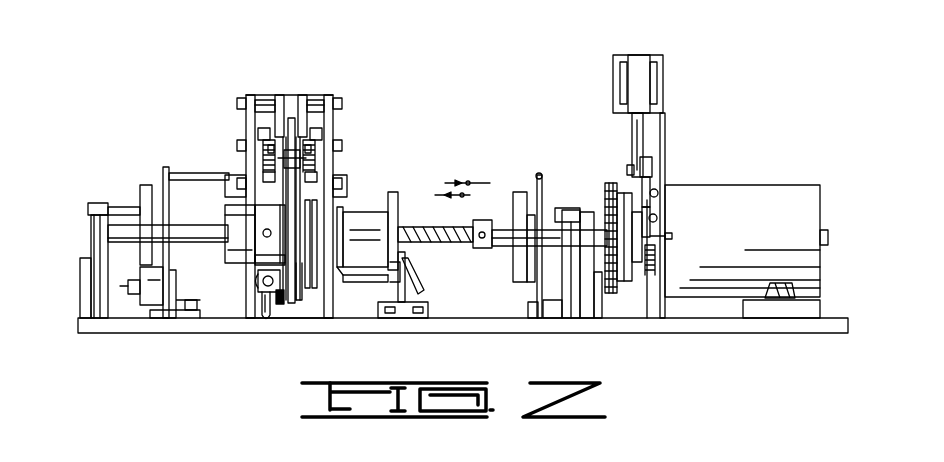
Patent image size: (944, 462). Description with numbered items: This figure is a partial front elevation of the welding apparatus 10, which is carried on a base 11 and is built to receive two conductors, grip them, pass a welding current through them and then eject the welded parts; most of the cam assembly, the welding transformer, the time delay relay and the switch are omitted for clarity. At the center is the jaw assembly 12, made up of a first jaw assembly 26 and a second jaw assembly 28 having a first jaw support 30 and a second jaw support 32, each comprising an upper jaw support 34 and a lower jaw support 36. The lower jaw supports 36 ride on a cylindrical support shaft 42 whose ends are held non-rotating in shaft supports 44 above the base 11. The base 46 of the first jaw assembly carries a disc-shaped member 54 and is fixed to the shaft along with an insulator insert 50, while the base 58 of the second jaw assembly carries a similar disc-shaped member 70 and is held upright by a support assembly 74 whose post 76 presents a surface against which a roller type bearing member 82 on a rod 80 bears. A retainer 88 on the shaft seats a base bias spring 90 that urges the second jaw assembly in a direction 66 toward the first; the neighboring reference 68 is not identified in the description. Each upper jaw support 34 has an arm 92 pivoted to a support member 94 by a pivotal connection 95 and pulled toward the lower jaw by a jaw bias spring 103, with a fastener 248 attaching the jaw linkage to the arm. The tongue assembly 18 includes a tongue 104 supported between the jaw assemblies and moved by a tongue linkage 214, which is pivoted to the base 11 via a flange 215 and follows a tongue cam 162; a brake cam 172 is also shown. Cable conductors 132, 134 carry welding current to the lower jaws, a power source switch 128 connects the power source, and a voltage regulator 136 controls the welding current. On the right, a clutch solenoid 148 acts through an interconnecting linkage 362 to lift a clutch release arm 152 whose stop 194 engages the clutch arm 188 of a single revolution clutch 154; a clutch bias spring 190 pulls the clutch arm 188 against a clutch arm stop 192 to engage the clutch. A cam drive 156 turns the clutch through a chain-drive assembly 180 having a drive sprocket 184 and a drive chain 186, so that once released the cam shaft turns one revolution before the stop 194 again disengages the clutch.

The welding apparatus 10 is at (340, 52).
The base 11 is at (790, 333).
The jaw assembly 12 is at (248, 78).
The tongue assembly 18 is at (296, 95).
The first jaw assembly 26 is at (262, 278).
The second jaw assembly 28 is at (310, 262).
The first jaw support 30 is at (280, 306).
The second jaw support 32 is at (318, 286).
The upper jaw support 34 is at (250, 92).
The lower jaw support 36 is at (240, 232).
The support shaft 42 is at (118, 224).
The shaft support 44 is at (98, 252).
The base of first jaw assembly 46 is at (265, 256).
The insulator insert 50 is at (240, 249).
The disc-shaped member 54 is at (284, 222).
The base of second jaw assembly 58 is at (350, 225).
The direction 66 is at (466, 197).
The arrow direction 68 is at (462, 180).
The disc-shaped member 70 is at (300, 297).
The support assembly 74 is at (345, 252).
The post 76 is at (408, 318).
The rod 80 is at (335, 292).
The roller type bearing member 82 is at (415, 300).
The retainer 88 is at (483, 250).
The base bias spring 90 is at (455, 245).
The arm 92 is at (282, 97).
The support member 94 is at (265, 165).
The pivotal connection 95 is at (258, 145).
The jaw bias spring 103 is at (245, 182).
The tongue 104 is at (300, 152).
The power source switch 128 is at (800, 292).
The cable conductor 132 is at (265, 302).
The cable conductor 134 is at (420, 288).
The voltage regulator 136 is at (750, 310).
The clutch solenoid 148 is at (660, 72).
The clutch release arm 152 is at (651, 164).
The single revolution clutch 154 is at (672, 236).
The cam drive 156 is at (775, 188).
The tongue cam 162 is at (143, 192).
The brake cam 172 is at (522, 195).
The chain-drive assembly 180 is at (606, 178).
The drive sprocket 184 is at (609, 294).
The drive chain 186 is at (623, 282).
The clutch arm 188 is at (644, 212).
The clutch bias spring 190 is at (650, 263).
The clutch arm stop 192 is at (660, 220).
The stop 194 is at (648, 190).
The tongue linkage 214 is at (166, 172).
The flange 215 is at (195, 320).
The fastener 248 is at (237, 104).
The interconnecting linkage 362 is at (638, 146).